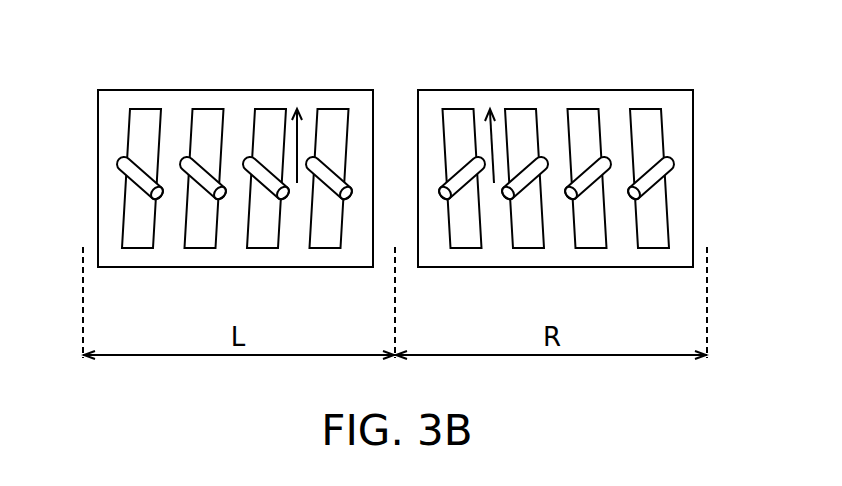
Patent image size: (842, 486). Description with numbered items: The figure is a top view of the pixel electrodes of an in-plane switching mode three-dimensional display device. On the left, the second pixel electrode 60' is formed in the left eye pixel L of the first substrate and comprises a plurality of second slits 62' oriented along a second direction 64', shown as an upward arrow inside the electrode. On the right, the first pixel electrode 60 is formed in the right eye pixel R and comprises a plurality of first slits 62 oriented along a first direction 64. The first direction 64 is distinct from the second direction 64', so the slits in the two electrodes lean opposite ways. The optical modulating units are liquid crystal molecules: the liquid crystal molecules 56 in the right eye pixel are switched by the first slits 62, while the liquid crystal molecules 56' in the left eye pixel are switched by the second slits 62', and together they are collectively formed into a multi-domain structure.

The second pixel electrode 60' is at (234, 149).
The second slits 62' is at (235, 139).
The second direction 64' is at (316, 107).
The second optical modulating unit 56' is at (193, 170).
The first pixel electrode 60 is at (556, 149).
The first slits 62 is at (556, 139).
The first direction 64 is at (474, 107).
The first optical modulating unit 56 is at (597, 170).